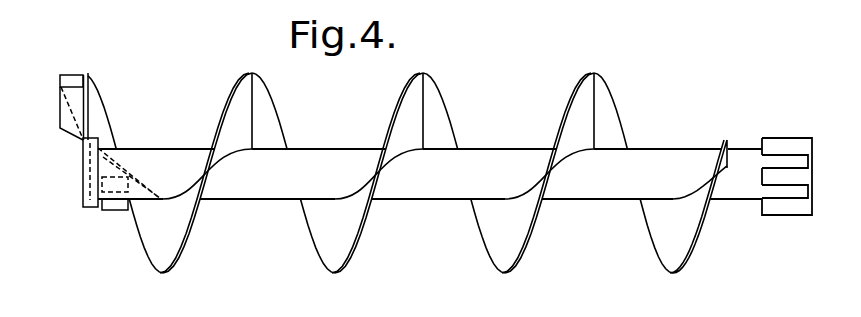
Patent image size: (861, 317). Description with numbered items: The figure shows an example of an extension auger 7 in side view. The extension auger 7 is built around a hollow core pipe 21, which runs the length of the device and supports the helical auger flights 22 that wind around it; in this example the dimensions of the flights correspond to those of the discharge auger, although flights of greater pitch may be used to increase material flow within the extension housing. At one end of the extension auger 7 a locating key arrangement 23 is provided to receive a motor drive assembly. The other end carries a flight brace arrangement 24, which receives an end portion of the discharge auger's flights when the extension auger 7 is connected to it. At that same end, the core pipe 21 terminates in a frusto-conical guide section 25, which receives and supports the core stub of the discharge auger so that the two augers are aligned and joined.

The extension auger 7 is at (400, 242).
The hollow core pipe 21 is at (598, 187).
The helical auger flights 22 is at (438, 115).
The locating key arrangement 23 is at (783, 210).
The flight brace arrangement 24 is at (65, 98).
The frusto-conical guide section 25 is at (83, 193).